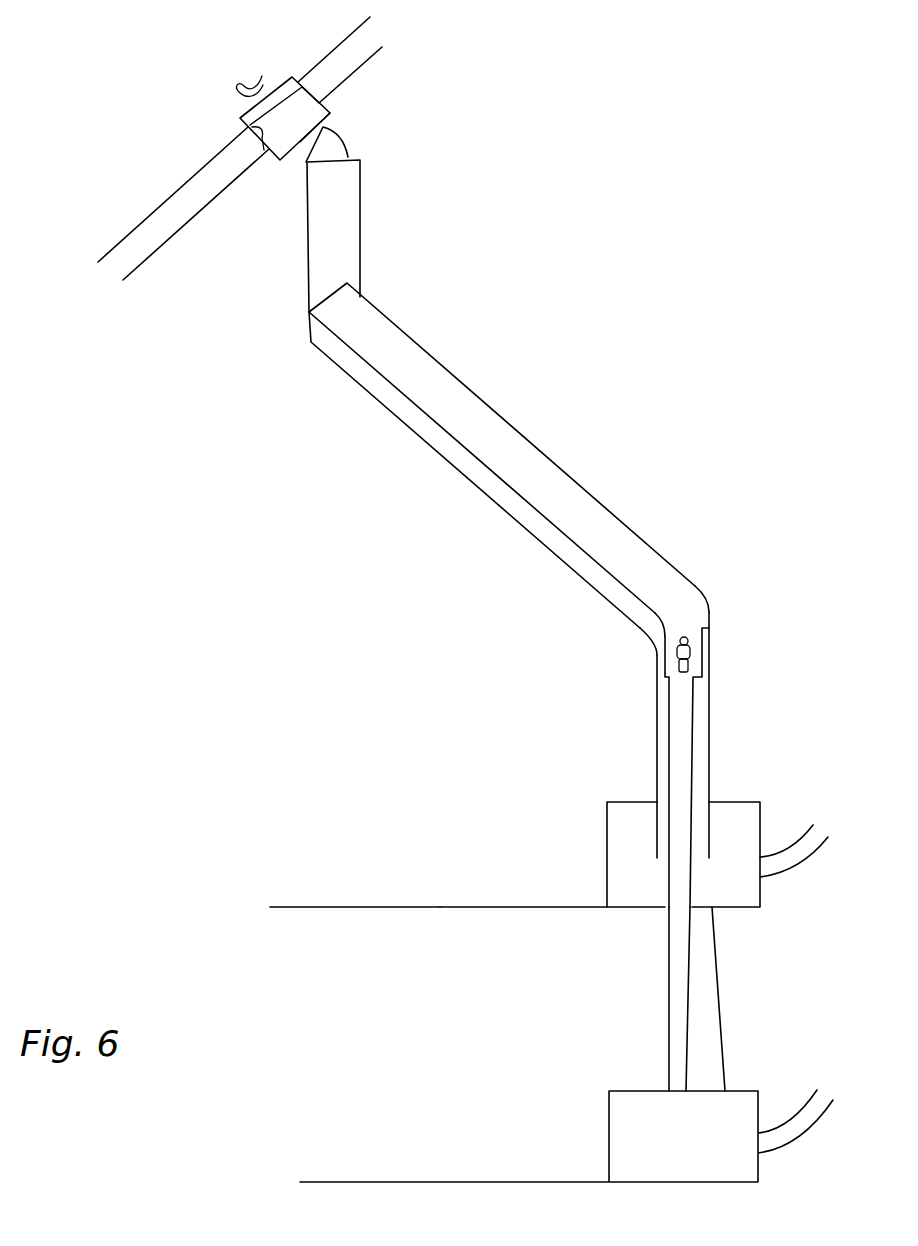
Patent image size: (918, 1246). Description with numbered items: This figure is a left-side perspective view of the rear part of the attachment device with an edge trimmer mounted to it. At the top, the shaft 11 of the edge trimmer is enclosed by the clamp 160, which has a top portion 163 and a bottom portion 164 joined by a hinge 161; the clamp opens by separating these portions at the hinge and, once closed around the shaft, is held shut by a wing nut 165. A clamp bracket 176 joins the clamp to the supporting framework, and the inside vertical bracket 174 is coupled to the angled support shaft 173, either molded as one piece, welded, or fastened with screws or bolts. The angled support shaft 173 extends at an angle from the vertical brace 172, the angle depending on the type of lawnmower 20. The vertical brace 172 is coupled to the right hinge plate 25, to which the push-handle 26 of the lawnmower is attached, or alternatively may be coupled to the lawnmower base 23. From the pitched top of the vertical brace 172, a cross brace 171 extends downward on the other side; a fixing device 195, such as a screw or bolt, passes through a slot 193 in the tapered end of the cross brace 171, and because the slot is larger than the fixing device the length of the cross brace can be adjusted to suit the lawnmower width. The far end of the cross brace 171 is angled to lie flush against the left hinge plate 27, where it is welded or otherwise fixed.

The shaft 11 is at (177, 197).
The lawnmower 20 is at (414, 905).
The lawnmower base 23 is at (497, 915).
The right hinge plate 25 is at (755, 822).
The push-handle 26 is at (800, 864).
The left hinge plate 27 is at (745, 1112).
The clamp 160 is at (283, 85).
The hinge 161 is at (312, 100).
The top portion 163 is at (252, 130).
The bottom portion 164 is at (277, 152).
The wing nut 165 is at (247, 80).
The cross brace 171 is at (667, 958).
The vertical brace 172 is at (712, 718).
The angled support shaft 173 is at (462, 400).
The inside vertical bracket 174 is at (363, 224).
The clamp bracket 176 is at (338, 134).
The slot 193 is at (683, 636).
The fixing device 195 is at (690, 650).